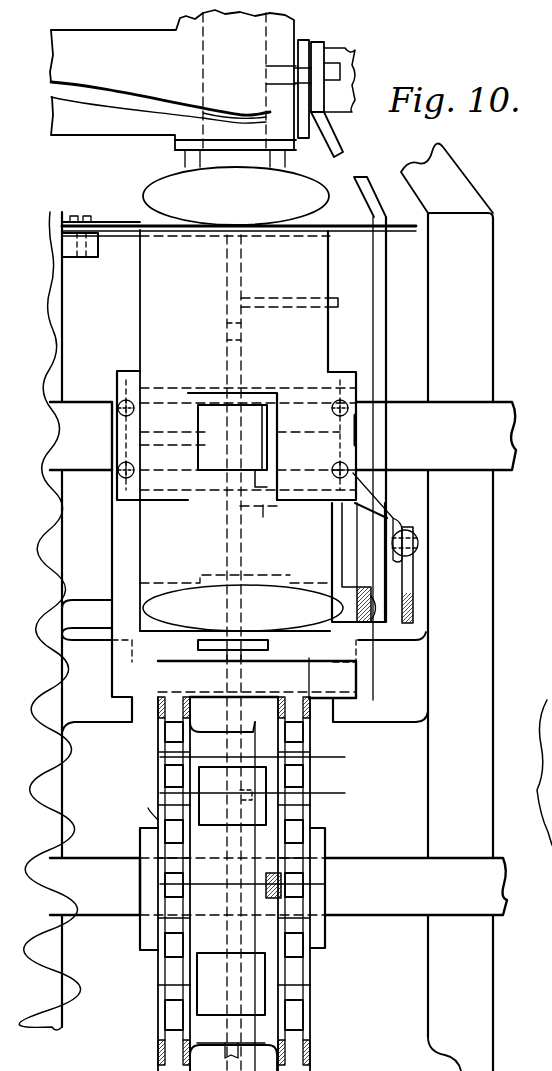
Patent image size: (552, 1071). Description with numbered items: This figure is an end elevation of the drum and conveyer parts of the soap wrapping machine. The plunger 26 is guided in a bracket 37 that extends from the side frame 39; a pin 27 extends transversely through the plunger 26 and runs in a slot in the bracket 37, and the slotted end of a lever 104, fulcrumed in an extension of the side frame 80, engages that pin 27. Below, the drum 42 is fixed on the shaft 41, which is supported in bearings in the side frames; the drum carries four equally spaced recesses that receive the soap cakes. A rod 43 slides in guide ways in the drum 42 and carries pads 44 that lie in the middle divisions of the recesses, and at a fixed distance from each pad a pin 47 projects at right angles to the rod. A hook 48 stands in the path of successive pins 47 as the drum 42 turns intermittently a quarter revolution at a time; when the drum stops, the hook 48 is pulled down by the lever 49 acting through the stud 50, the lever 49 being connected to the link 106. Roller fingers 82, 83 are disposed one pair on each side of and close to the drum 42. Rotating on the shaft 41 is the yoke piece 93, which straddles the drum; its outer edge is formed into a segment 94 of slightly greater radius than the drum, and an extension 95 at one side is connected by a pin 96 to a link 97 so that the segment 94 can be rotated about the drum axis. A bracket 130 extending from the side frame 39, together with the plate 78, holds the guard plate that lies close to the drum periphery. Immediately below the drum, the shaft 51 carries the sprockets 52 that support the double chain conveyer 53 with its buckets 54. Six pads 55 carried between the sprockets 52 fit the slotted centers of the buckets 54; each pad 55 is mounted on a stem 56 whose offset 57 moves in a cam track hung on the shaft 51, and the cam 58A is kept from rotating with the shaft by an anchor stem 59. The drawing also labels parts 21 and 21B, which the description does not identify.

The bracket 37 is at (95, 40).
The plunger 26 is at (212, 14).
The lever 104 is at (302, 42).
The pin 27 is at (322, 80).
The link 106 is at (335, 144).
The wheel 21 is at (296, 645).
The mounting bar 21B is at (122, 224).
The plate 78 is at (402, 233).
The side frame 39 is at (64, 293).
The rod 43 is at (229, 291).
The pin 47 is at (336, 303).
The segment 94 is at (322, 336).
The side frame 80 is at (478, 335).
The yoke piece 93 is at (338, 382).
The roller finger 82 is at (118, 402).
The roller finger 83 is at (118, 476).
The shaft 41 is at (506, 430).
The pad 44 is at (212, 438).
The extension 95 is at (393, 518).
The pin 96 is at (420, 538).
The hook 48 is at (340, 560).
The stud 50 is at (372, 603).
The lever 49 is at (366, 624).
The link 97 is at (410, 580).
The drum 42 is at (160, 566).
The bracket 130 is at (92, 615).
The pad 55 is at (206, 645).
The bucket 54 is at (316, 688).
The double chain conveyer 53 is at (300, 712).
The stem 56 is at (312, 757).
The offset 57 is at (312, 794).
The sprocket 52 is at (150, 832).
The anchor stem 59 is at (326, 887).
The cam 58A is at (272, 886).
The shaft 51 is at (505, 897).